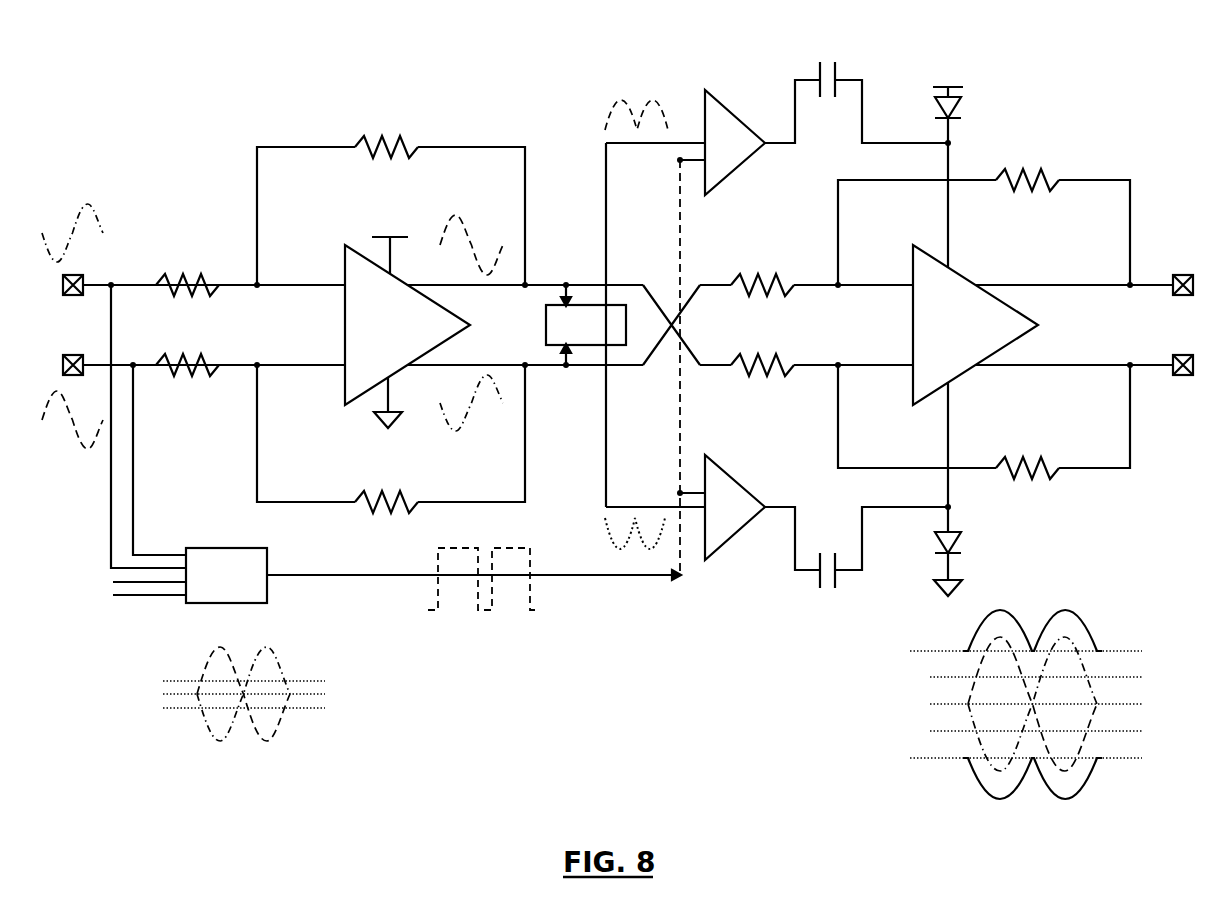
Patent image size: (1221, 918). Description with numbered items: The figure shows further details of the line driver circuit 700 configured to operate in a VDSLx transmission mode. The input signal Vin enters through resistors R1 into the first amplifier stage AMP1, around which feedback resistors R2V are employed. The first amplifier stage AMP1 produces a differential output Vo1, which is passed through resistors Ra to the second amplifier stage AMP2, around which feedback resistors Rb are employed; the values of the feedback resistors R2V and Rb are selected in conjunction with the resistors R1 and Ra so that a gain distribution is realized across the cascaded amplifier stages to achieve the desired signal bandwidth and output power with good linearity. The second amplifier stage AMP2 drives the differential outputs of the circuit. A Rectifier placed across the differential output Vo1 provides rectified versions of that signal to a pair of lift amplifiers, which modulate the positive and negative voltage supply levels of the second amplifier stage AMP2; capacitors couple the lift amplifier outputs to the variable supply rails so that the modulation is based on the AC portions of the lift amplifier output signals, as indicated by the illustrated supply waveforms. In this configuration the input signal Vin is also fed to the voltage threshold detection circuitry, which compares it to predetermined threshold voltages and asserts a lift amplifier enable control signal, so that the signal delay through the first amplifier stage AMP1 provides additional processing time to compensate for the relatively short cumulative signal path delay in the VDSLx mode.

The line driver circuit 700 is at (158, 50).
The resistor R1 is at (187, 325).
The feedback resistors R2V is at (386, 309).
The first amplifier stage AMP1 is at (407, 322).
The second amplifier stage AMP2 is at (975, 325).
The resistor Ra is at (762, 325).
The feedback resistors Rb is at (1027, 331).
The differential output of the first amplifier stage Vo1 is at (525, 325).
The input signal Vin is at (50, 325).
The rectifier Rectifier is at (586, 325).